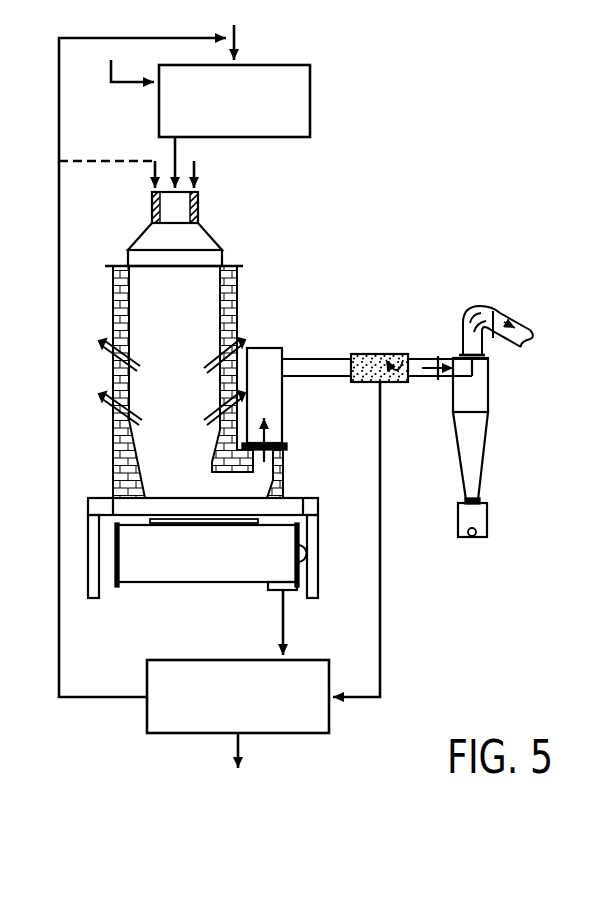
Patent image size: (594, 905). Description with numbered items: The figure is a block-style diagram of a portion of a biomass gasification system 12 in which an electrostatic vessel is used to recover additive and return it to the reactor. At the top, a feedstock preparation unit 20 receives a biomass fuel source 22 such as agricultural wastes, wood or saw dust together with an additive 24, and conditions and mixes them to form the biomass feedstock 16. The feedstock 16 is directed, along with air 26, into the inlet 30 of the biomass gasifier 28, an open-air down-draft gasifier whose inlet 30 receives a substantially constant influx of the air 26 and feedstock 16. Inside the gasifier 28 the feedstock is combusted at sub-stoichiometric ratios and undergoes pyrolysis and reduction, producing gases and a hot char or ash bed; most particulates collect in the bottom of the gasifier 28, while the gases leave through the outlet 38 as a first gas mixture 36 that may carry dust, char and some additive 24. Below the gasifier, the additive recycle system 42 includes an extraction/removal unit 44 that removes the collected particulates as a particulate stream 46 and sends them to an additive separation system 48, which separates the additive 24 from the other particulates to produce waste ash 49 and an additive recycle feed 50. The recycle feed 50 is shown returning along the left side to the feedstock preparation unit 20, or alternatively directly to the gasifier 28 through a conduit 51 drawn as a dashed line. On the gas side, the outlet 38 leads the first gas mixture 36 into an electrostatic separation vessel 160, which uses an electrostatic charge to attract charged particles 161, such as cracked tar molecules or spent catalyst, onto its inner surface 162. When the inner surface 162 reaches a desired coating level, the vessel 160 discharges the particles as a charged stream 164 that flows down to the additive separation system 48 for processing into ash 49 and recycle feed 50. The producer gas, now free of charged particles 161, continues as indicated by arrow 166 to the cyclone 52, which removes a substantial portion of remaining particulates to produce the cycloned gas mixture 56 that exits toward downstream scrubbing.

The gasification system 12 is at (299, 77).
The feedstock preparation unit 20 is at (298, 64).
The biomass fuel source 22 is at (112, 70).
The additive 24 is at (236, 32).
The biomass feedstock 16 is at (173, 158).
The air 26 is at (196, 164).
The conduit 51 is at (112, 161).
The additive recycle feed 50 is at (60, 245).
The biomass gasifier 28 is at (228, 340).
The inlet 30 is at (199, 210).
The outlet 38 is at (298, 358).
The first gas mixture 36 is at (267, 438).
The extraction/removal unit 44 is at (207, 583).
The particulate stream 46 is at (284, 612).
The additive separation system 48 is at (238, 659).
The additive recycle system 42 is at (276, 701).
The ash 49 is at (235, 763).
The electrostatic separation vessel 160 is at (360, 354).
The charged particles 161 is at (356, 383).
The inner surface 162 is at (402, 354).
The charged stream 164 is at (378, 541).
The arrow 166 is at (421, 366).
The cyclone 52 is at (459, 450).
The cycloned gas mixture 56 is at (482, 313).